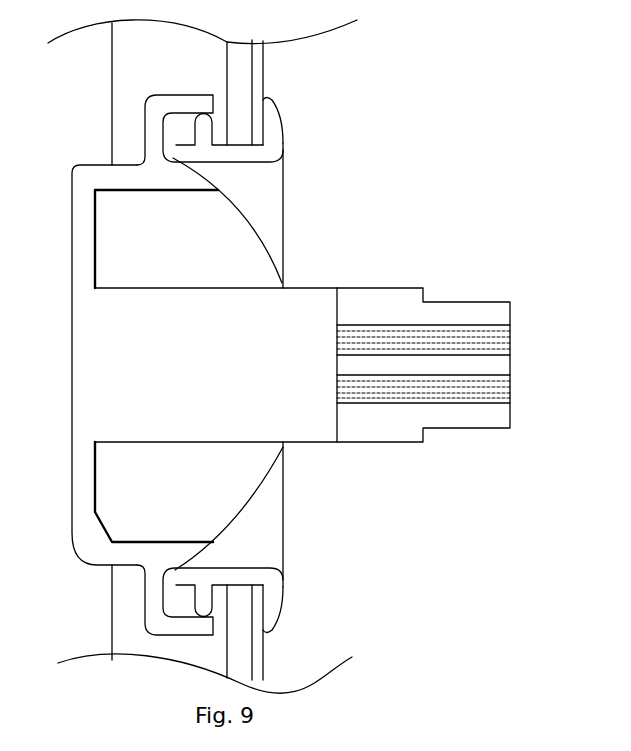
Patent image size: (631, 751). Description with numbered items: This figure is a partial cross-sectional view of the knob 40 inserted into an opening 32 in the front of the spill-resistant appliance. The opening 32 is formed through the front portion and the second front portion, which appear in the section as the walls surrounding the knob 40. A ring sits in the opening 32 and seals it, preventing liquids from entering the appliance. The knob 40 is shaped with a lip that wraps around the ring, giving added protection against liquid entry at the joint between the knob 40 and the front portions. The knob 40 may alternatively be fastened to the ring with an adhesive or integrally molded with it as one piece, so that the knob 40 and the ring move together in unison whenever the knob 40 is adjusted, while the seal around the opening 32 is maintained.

The opening 32 is at (276, 584).
The knob 40 is at (182, 312).